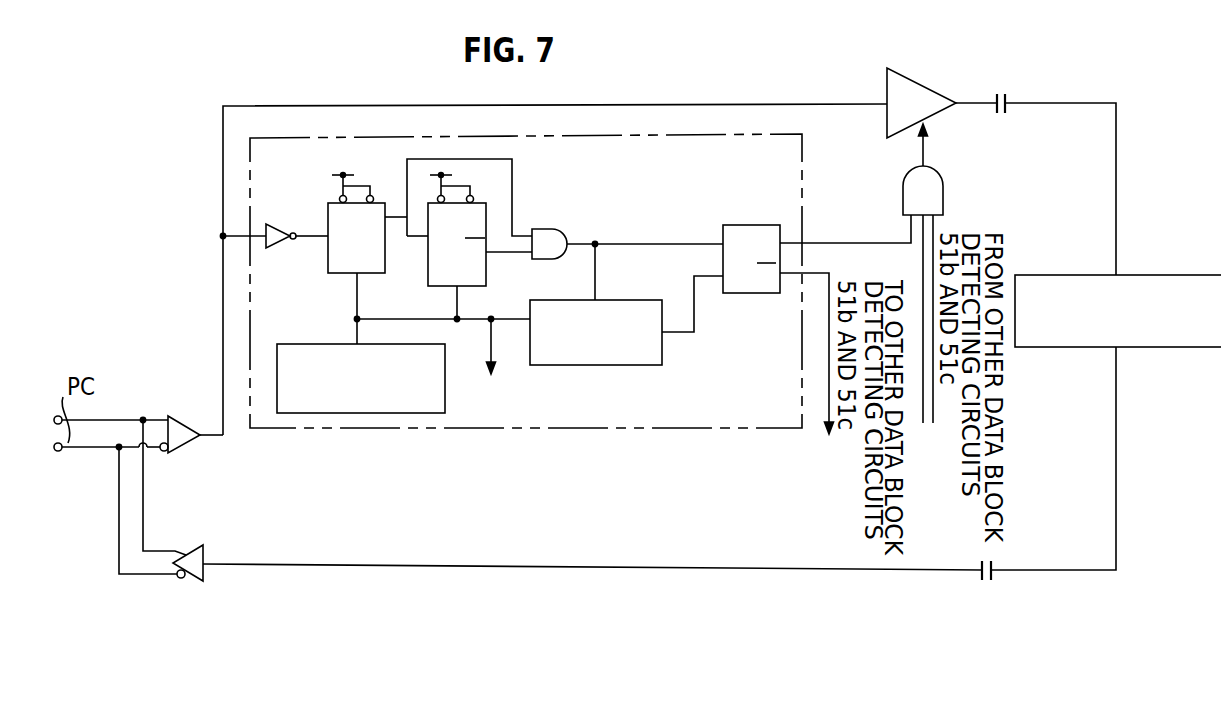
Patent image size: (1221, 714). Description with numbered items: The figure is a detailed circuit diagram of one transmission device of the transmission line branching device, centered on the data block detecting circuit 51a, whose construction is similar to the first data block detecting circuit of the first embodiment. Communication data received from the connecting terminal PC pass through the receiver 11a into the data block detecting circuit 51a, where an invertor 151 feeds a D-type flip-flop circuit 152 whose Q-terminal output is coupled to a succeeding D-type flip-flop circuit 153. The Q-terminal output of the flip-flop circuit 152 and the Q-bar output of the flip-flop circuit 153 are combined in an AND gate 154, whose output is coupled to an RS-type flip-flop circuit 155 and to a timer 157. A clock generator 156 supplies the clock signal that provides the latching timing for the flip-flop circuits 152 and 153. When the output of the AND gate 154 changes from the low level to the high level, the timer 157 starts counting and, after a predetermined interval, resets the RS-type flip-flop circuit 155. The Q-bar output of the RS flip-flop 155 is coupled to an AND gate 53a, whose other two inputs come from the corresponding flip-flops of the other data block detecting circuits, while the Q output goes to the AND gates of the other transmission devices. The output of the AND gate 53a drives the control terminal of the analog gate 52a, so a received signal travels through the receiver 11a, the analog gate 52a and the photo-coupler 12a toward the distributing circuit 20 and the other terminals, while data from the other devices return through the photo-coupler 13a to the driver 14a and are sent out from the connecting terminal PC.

The receiver 11a is at (183, 414).
The photo-coupler 12a is at (1001, 96).
The photo-coupler 13a is at (991, 581).
The driver 14a is at (190, 583).
The distributing circuit 20 is at (1017, 275).
The data block detecting circuit 51a is at (805, 135).
The analog gate 52a is at (929, 88).
The AND gate 53a is at (943, 189).
The invertor 151 is at (280, 223).
The D-type flip-flop circuit 152 is at (328, 203).
The D-type flip-flop circuit 153 is at (487, 203).
The AND gate 154 is at (540, 230).
The RS-type flip-flop circuit 155 is at (736, 225).
The clock generator 156 is at (277, 344).
The timer 157 is at (530, 300).